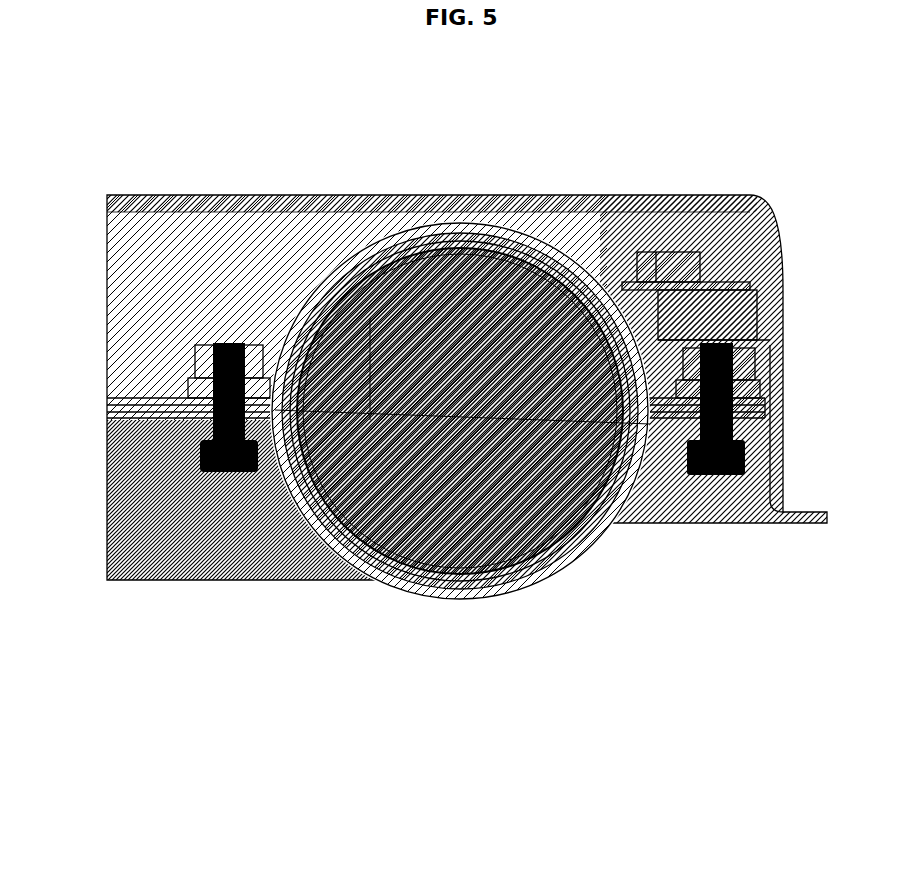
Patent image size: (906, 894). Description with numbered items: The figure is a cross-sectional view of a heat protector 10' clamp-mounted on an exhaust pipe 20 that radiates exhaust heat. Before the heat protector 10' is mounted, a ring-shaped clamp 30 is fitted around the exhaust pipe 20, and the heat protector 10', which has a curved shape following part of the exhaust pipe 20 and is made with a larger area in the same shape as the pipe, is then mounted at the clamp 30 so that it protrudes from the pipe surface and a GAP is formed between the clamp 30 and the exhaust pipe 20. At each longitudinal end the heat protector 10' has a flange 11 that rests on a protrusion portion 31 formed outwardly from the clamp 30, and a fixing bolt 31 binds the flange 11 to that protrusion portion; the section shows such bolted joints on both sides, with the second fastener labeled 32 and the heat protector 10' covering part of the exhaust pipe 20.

The heat protector 10' is at (462, 323).
The flange 11 is at (300, 213).
The exhaust pipe 20 is at (292, 580).
The clamp 30 is at (507, 600).
The protrusion portion 31 is at (205, 430).
The second bolt 32 is at (705, 478).
The gap between pipe and clamp GAP is at (498, 248).